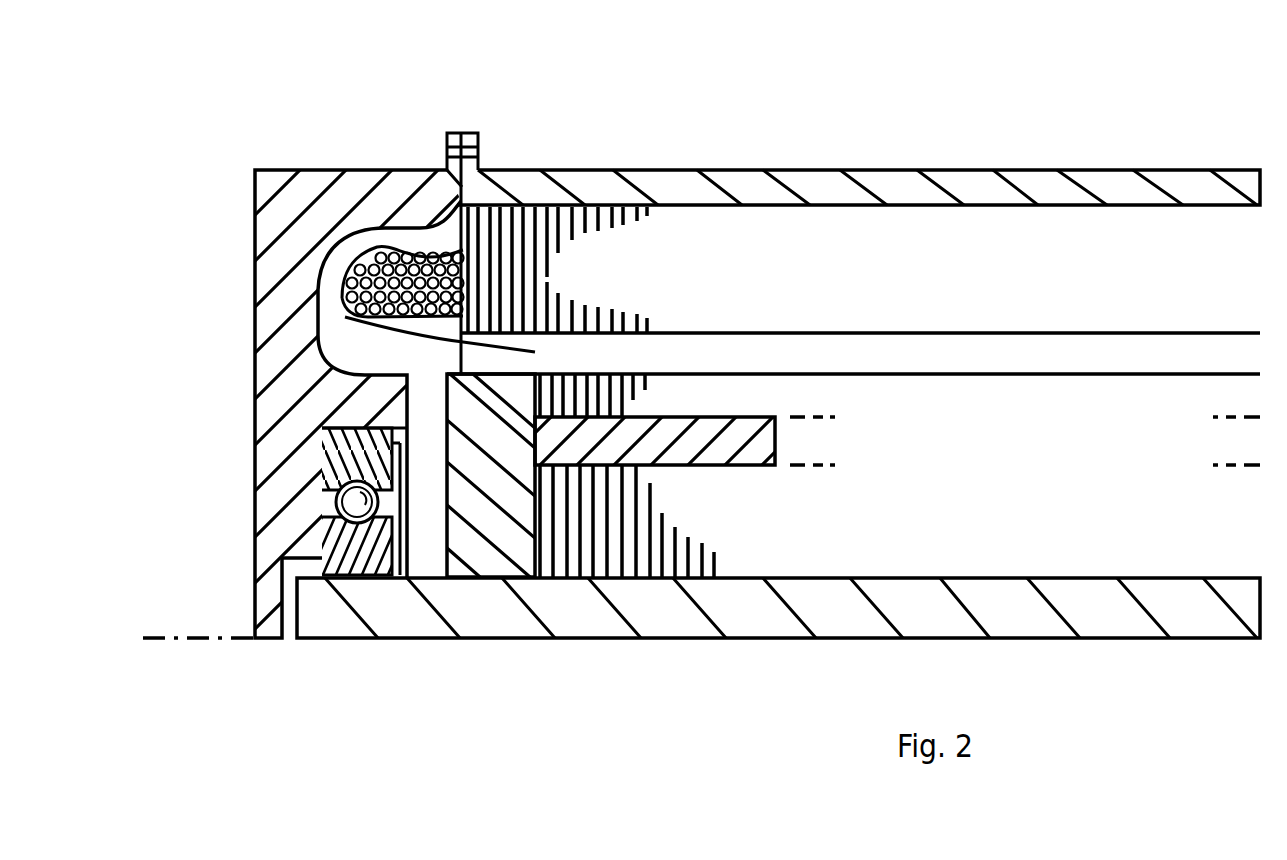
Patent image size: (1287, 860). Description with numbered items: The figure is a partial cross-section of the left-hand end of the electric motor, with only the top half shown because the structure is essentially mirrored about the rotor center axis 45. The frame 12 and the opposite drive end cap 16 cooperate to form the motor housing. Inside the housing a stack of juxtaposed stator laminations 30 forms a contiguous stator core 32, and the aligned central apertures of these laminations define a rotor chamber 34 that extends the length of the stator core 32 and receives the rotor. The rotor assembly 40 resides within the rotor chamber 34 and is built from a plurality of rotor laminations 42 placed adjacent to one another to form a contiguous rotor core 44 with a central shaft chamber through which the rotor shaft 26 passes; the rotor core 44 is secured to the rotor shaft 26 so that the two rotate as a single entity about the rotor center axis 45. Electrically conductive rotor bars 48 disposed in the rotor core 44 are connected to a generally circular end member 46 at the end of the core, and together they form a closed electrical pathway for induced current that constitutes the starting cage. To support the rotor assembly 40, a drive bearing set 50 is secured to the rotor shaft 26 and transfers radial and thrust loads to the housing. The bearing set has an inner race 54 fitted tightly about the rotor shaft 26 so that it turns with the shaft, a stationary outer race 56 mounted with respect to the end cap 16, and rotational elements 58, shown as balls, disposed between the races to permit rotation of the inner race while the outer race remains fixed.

The frame 12 is at (648, 170).
The opposite drive end cap 16 is at (282, 170).
The rotor shaft 26 is at (995, 603).
The stator laminations 30 is at (548, 205).
The stator core 32 is at (1147, 252).
The rotor chamber 34 is at (322, 305).
The rotor assembly 40 is at (1133, 495).
The rotor laminations 42 is at (583, 578).
The rotor core 44 is at (825, 572).
The rotor center axis 45 is at (179, 643).
The rotor end members 46 is at (477, 556).
The rotor bars 48 is at (728, 418).
The drive bearing set 50 is at (335, 512).
The inner race 54 is at (360, 548).
The outer race 56 is at (320, 428).
The rotational elements 58 is at (347, 501).